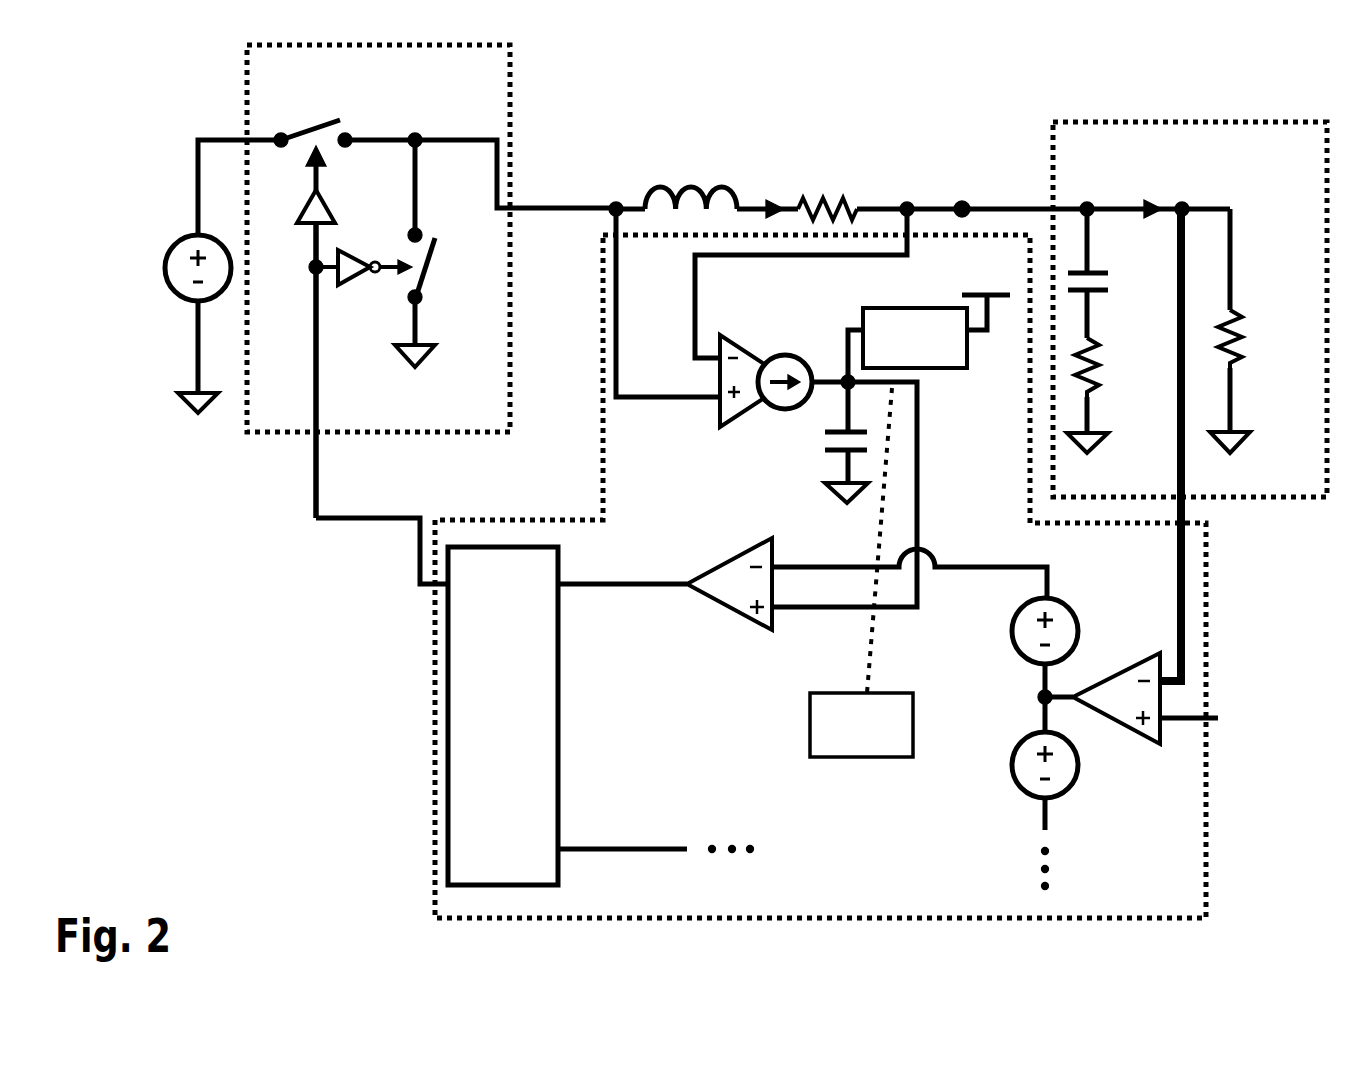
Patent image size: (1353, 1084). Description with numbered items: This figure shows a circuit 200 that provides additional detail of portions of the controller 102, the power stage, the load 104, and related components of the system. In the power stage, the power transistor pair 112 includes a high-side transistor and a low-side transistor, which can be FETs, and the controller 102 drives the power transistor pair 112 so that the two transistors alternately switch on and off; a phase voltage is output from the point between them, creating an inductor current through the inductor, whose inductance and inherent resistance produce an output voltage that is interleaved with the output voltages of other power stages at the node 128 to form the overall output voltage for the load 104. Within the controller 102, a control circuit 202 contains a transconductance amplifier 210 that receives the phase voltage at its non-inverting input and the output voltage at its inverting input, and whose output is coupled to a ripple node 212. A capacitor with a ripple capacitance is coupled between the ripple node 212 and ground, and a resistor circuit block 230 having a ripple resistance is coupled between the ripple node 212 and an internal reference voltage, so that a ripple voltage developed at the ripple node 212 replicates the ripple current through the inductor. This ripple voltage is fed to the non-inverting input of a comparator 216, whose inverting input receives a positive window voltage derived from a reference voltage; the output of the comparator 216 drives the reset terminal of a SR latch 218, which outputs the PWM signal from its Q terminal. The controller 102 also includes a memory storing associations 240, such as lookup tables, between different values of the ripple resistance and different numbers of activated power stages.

The circuit 200 is at (130, 810).
The controller 102 is at (434, 728).
The load 104 is at (1140, 120).
The power transistor pair 112 is at (268, 435).
The node 128 is at (962, 205).
The control circuit 202 is at (1222, 799).
The transconductance amplifier 210 is at (750, 410).
The ripple node 212 is at (852, 388).
The comparator 216 is at (748, 617).
The SR latch 218 is at (472, 738).
The resistor circuit block 230 is at (888, 357).
The associations 240 is at (835, 743).